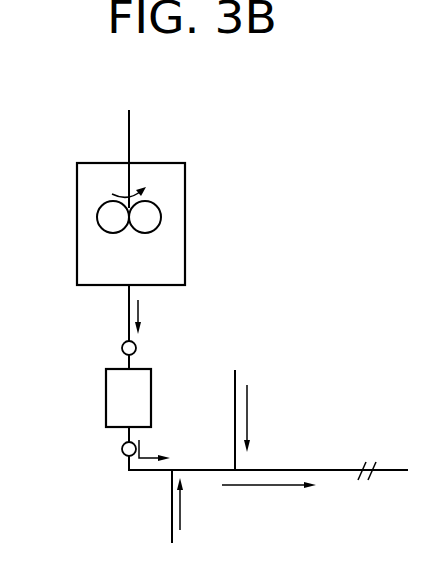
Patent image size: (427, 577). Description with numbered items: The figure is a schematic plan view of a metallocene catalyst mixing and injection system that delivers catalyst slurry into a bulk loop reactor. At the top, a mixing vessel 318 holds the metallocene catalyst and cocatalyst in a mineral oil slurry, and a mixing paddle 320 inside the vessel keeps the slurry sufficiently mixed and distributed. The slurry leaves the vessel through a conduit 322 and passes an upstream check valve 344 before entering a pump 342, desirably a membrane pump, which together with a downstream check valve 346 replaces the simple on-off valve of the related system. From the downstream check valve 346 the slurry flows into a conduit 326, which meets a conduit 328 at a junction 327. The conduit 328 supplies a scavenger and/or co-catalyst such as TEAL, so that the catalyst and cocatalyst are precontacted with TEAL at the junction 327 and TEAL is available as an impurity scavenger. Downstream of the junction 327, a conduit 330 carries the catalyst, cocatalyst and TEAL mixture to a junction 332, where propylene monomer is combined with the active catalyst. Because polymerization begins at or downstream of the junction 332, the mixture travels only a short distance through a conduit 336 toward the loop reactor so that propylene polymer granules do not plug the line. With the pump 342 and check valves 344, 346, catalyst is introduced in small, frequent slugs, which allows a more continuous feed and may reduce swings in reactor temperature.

The mixing vessel 318 is at (186, 226).
The mixing paddle 320 is at (128, 137).
The conduit 322 is at (128, 306).
The conduit 326 is at (135, 472).
The junction 327 is at (172, 470).
The conduit 328 is at (172, 539).
The conduit 330 is at (208, 472).
The junction 332 is at (238, 469).
The conduit 336 is at (343, 470).
The pump 342 is at (106, 398).
The upstream check valve 344 is at (136, 351).
The downstream check valve 346 is at (121, 449).